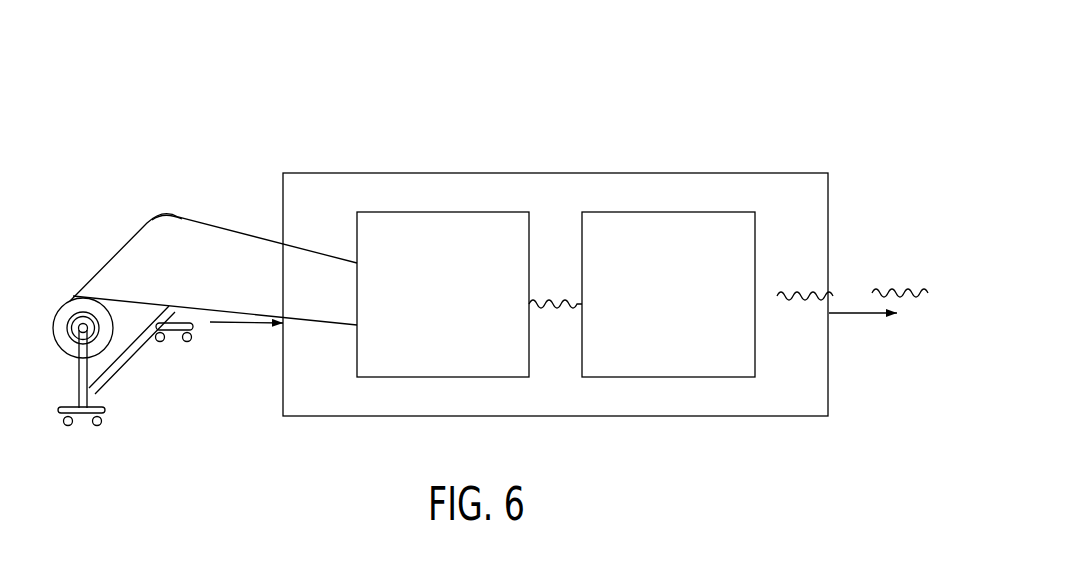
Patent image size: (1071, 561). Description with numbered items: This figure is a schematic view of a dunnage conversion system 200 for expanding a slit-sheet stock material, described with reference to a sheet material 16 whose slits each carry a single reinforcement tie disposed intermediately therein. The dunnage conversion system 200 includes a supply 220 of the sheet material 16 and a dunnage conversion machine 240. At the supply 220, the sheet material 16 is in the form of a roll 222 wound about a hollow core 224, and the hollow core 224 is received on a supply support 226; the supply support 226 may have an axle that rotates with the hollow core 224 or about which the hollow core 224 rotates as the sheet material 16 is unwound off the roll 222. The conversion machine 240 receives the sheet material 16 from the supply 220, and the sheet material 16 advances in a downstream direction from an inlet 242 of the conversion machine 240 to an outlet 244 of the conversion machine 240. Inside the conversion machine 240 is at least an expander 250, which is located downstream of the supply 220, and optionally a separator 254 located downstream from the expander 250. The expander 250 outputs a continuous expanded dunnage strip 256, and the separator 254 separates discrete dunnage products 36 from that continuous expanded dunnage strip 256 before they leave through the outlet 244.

The dunnage conversion system 200 is at (363, 88).
The supply 220 is at (152, 187).
The roll 222 is at (115, 271).
The hollow core 224 is at (73, 343).
The supply support 226 is at (115, 382).
The sheet material 16 is at (222, 228).
The dunnage conversion machine 240 is at (558, 174).
The inlet 242 is at (292, 227).
The outlet 244 is at (829, 197).
The expander 250 is at (444, 212).
The separator 254 is at (668, 212).
The continuous expanded dunnage strip 256 is at (572, 309).
The dunnage products 36 is at (875, 288).